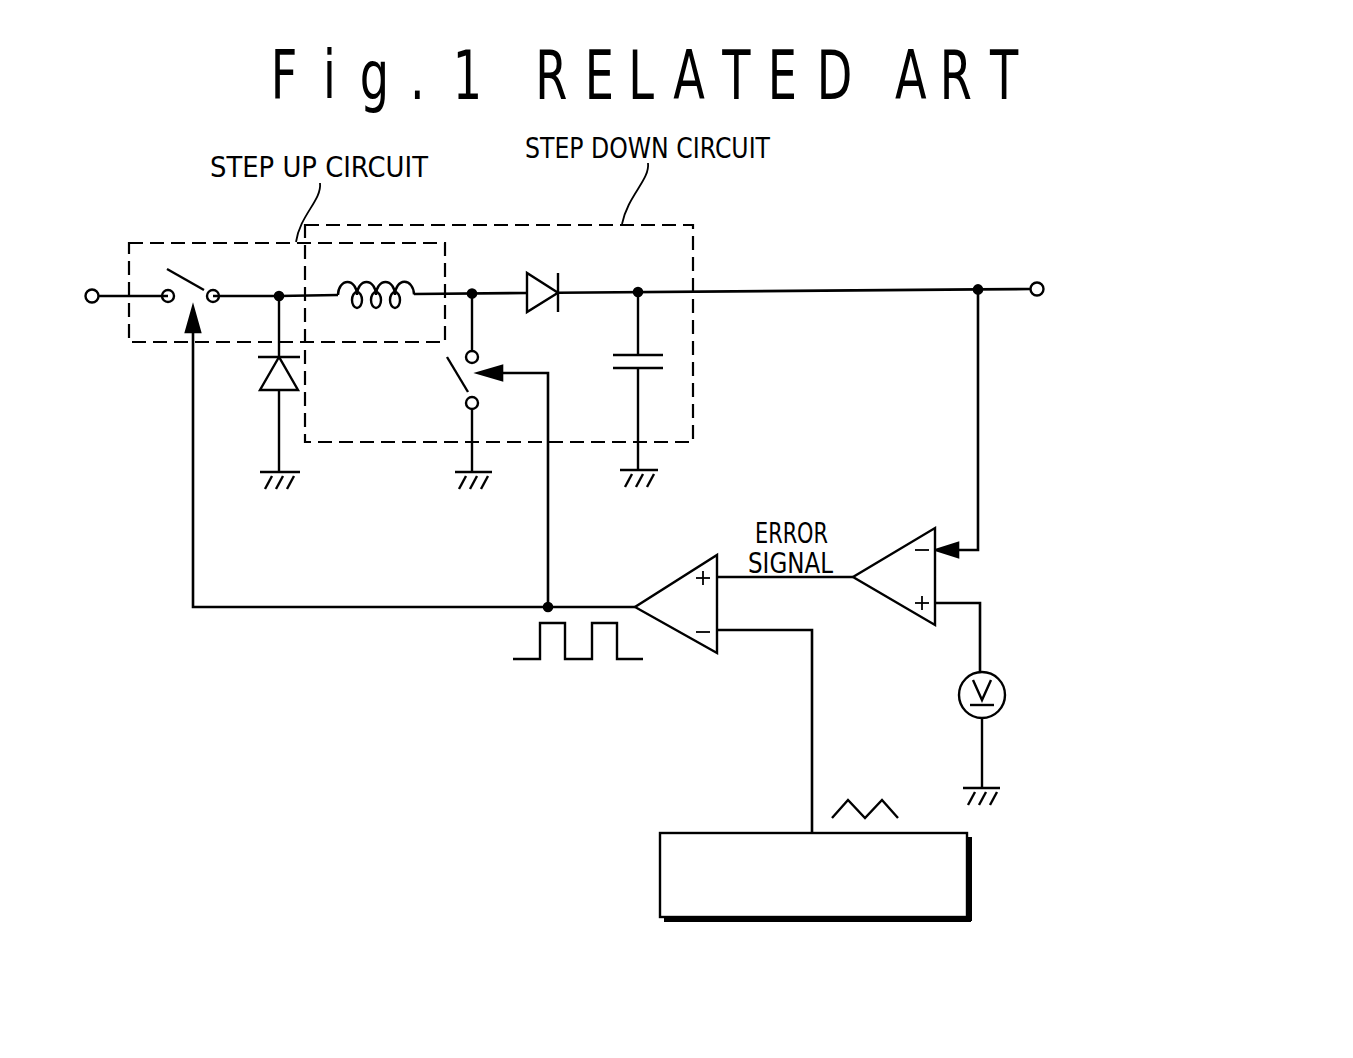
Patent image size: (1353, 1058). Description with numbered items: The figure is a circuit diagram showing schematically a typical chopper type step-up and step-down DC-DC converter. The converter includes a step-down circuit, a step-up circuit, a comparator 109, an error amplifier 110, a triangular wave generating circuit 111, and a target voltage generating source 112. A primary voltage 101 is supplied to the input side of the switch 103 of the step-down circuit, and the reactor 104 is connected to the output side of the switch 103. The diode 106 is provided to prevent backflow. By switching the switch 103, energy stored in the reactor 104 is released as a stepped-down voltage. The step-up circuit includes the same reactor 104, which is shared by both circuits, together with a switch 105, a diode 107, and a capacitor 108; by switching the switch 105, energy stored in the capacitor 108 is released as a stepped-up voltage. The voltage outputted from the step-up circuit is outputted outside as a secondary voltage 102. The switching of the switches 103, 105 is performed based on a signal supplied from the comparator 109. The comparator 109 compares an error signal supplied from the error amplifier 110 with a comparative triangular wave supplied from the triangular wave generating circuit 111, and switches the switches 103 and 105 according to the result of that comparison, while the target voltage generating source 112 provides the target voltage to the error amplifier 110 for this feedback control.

The primary voltage 101 is at (91, 288).
The secondary voltage 102 is at (1037, 281).
The switch 103 is at (191, 288).
The reactor 104 is at (373, 280).
The switch 105 is at (455, 380).
The diode 106 is at (268, 392).
The diode 107 is at (538, 273).
The capacitor 108 is at (653, 361).
The comparator 109 is at (673, 577).
The error amplifier 110 is at (893, 552).
The triangular wave generating circuit 111 is at (658, 877).
The target voltage generating source 112 is at (1005, 695).